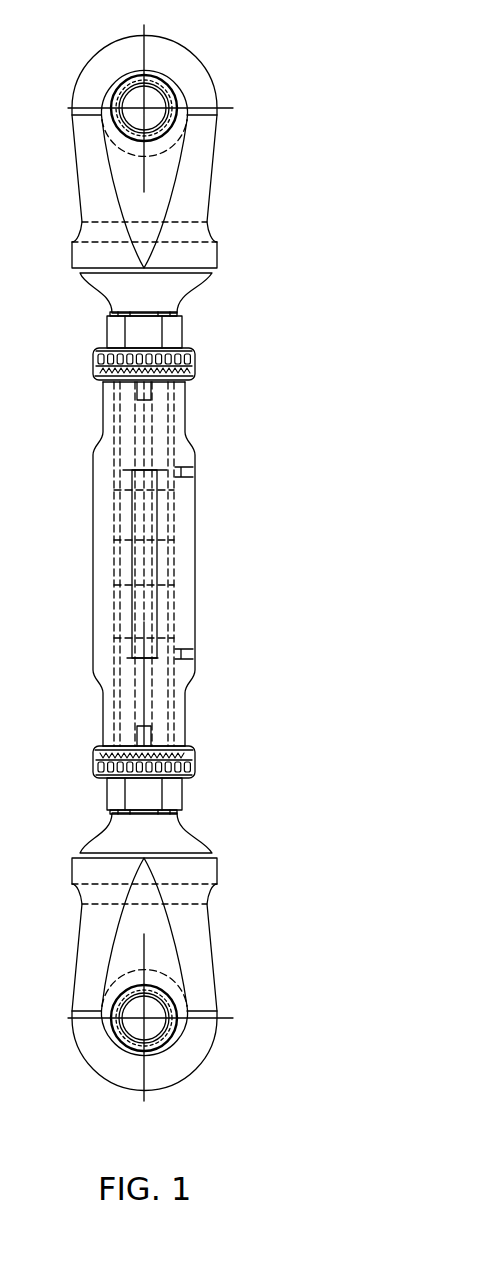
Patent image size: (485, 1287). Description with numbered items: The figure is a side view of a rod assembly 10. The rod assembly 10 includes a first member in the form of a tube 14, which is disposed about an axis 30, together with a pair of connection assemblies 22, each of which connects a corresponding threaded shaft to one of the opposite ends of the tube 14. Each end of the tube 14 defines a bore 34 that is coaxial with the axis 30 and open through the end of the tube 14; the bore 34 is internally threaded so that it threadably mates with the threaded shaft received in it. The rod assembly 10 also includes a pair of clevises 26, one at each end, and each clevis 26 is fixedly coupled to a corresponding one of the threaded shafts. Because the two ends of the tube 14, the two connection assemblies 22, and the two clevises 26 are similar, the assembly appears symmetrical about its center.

The rod assembly 10 is at (300, 65).
The tube 14 is at (195, 627).
The connection assembly 22 is at (228, 328).
The clevis 26 is at (212, 180).
The axis 30 is at (150, 513).
The bore 34 is at (177, 424).